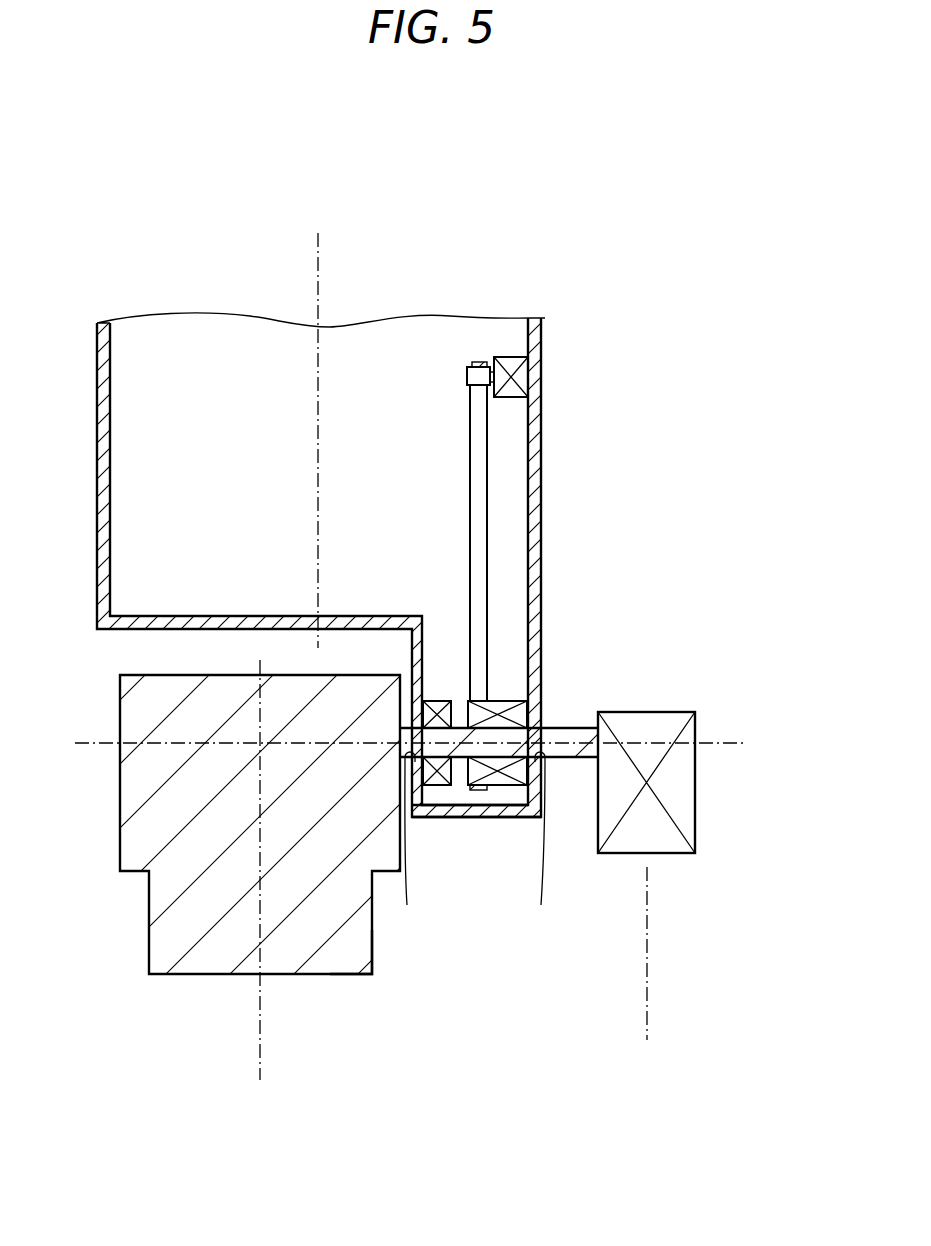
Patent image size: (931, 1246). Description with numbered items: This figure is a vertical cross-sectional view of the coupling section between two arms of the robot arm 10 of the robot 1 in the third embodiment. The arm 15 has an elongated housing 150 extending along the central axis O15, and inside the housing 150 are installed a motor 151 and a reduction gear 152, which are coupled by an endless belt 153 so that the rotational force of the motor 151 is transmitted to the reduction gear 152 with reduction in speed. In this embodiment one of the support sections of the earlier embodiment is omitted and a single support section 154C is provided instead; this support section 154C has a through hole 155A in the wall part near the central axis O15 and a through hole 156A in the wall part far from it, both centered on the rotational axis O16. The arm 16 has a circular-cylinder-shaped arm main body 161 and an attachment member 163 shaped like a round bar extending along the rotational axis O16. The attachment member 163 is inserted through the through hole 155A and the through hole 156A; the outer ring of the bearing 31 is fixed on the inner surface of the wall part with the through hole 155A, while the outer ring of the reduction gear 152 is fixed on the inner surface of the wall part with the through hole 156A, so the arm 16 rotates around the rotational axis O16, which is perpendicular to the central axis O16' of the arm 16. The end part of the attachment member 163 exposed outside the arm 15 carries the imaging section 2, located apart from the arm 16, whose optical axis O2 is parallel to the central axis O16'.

The processing apparatus 1 is at (530, 188).
The imaging section 2 is at (668, 711).
The robot arm 10 is at (594, 520).
The arm 15 is at (552, 330).
The arm 16 is at (331, 976).
The bearing 31 is at (435, 700).
The housing 150 is at (543, 382).
The motor 151 is at (512, 357).
The reduction gear 152 is at (500, 700).
The endless belt 153 is at (482, 452).
The support section 154C is at (472, 818).
The through hole 155A is at (408, 844).
The through hole 156A is at (543, 844).
The arm main body 161 is at (372, 958).
The attachment member 163 is at (560, 728).
The central axis O15 is at (318, 278).
The rotational axis O16 is at (436, 770).
The central axis O16' is at (226, 870).
The optical axis O2 is at (647, 900).